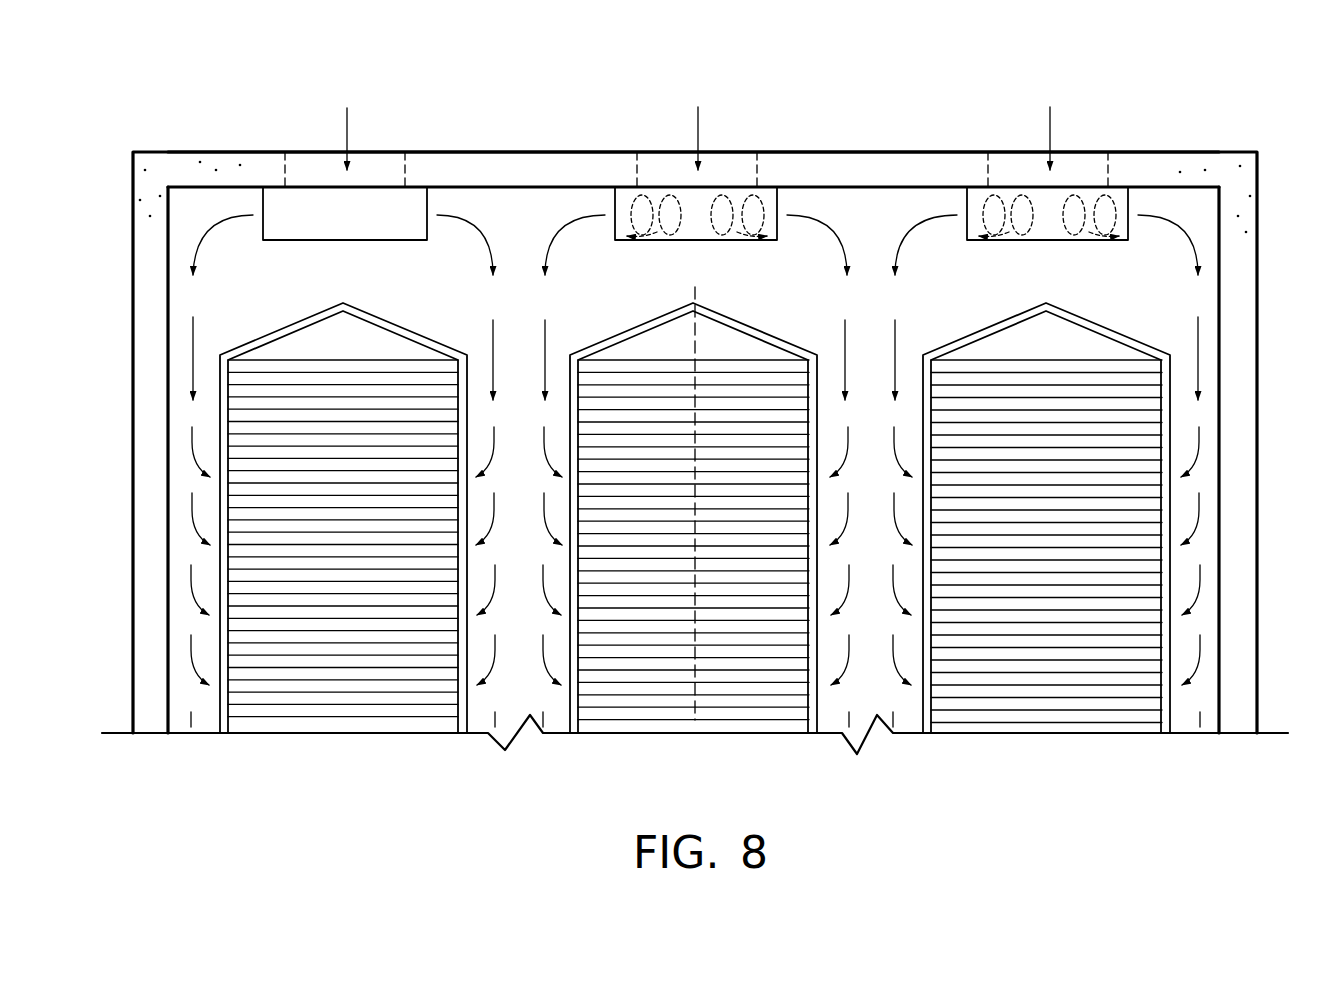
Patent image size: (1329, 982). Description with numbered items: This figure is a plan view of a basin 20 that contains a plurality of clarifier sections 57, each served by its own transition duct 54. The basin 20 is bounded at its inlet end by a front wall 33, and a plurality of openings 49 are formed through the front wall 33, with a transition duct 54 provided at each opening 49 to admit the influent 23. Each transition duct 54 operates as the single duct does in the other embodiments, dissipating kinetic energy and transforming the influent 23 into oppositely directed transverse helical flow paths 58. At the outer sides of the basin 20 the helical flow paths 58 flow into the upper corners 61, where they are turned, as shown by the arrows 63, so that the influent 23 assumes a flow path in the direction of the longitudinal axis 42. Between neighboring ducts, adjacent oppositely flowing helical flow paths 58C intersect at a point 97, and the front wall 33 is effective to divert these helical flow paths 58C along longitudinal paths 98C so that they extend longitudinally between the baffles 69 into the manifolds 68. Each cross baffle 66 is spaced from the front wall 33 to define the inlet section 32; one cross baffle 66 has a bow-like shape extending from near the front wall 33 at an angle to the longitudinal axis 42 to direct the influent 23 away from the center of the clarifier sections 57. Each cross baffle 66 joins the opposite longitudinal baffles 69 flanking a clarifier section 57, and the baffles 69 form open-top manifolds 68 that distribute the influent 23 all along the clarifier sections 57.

The basin 20 is at (1262, 303).
The influent 23 is at (350, 118).
The inlet section 32 is at (217, 285).
The front wall 33 is at (259, 150).
The longitudinal axis 42 is at (692, 708).
The openings 49 is at (285, 170).
The transition duct 54 is at (330, 242).
The clarifier section 57 is at (312, 713).
The transverse helical flow paths 58 is at (640, 197).
The adjacent oppositely flowing helical flow paths 58C is at (567, 226).
The upper corners 61 is at (188, 203).
The turning of helical flow paths 63 is at (197, 250).
The cross baffle 66 is at (378, 318).
The manifolds 68 is at (182, 477).
The longitudinal baffles 69 is at (219, 436).
The intersection point 97 is at (470, 197).
The longitudinal paths 98C is at (508, 300).